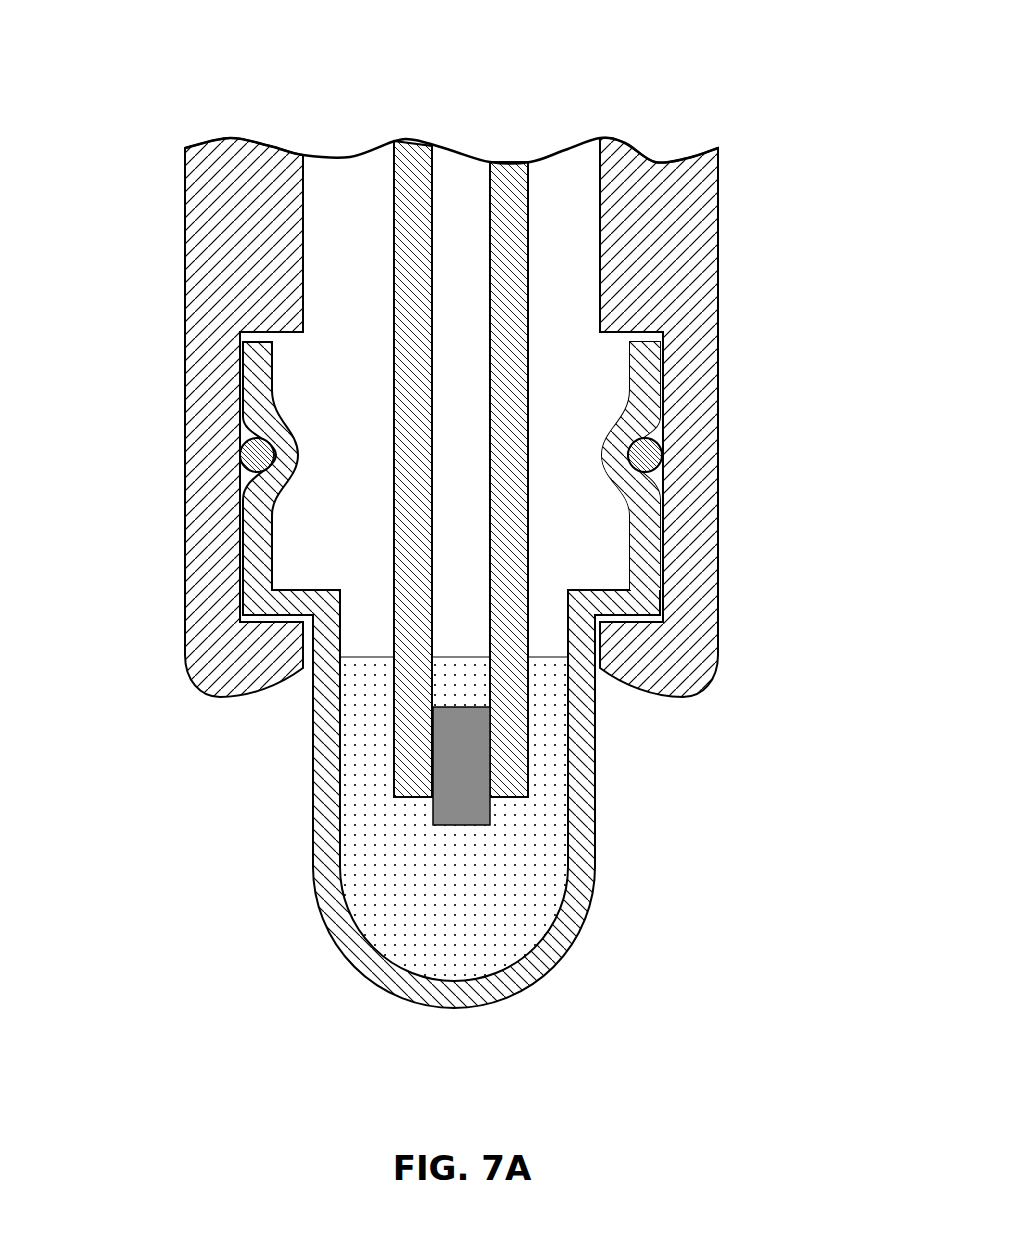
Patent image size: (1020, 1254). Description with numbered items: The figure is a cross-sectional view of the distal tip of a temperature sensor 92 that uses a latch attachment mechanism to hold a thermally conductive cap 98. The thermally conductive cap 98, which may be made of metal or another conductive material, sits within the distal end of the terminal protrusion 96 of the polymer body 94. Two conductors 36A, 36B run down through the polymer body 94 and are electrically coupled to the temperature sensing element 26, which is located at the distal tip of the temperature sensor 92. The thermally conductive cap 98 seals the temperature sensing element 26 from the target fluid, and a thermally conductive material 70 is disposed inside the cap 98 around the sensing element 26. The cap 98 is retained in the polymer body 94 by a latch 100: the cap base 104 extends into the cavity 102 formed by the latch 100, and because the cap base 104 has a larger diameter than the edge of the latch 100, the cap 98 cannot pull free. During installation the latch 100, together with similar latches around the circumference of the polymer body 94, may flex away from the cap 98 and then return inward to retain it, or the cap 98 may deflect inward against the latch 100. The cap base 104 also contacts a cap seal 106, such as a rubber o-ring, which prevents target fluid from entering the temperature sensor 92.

The temperature sensor 92 is at (778, 102).
The terminal protrusion 96 is at (167, 182).
The polymer body 94 is at (718, 182).
The conductor 36A is at (393, 213).
The conductor 36B is at (528, 215).
The cavity 102 is at (612, 343).
The cap base 104 is at (625, 530).
The cap seal 106 is at (663, 457).
The latch 100 is at (727, 681).
The temperature sensing element 26 is at (437, 813).
The thermally conductive material 70 is at (530, 903).
The thermally conductive cap 98 is at (393, 993).